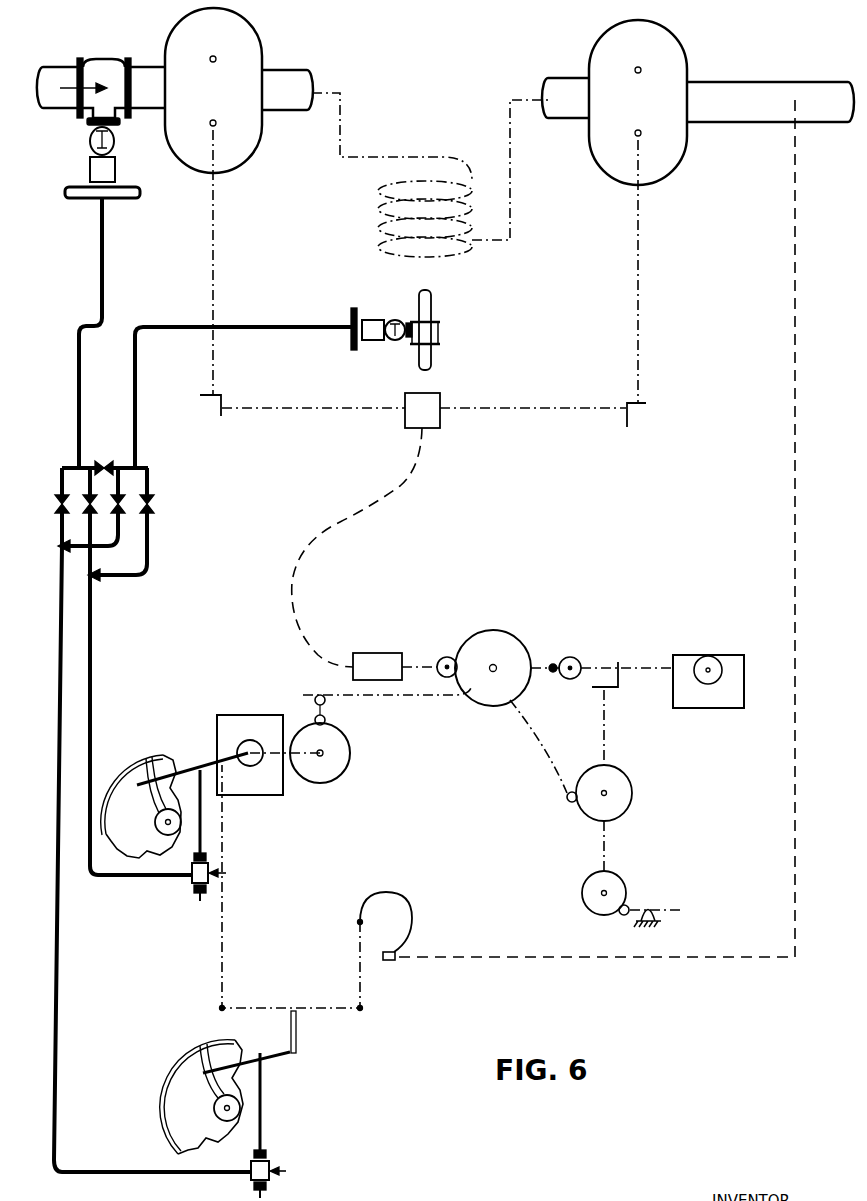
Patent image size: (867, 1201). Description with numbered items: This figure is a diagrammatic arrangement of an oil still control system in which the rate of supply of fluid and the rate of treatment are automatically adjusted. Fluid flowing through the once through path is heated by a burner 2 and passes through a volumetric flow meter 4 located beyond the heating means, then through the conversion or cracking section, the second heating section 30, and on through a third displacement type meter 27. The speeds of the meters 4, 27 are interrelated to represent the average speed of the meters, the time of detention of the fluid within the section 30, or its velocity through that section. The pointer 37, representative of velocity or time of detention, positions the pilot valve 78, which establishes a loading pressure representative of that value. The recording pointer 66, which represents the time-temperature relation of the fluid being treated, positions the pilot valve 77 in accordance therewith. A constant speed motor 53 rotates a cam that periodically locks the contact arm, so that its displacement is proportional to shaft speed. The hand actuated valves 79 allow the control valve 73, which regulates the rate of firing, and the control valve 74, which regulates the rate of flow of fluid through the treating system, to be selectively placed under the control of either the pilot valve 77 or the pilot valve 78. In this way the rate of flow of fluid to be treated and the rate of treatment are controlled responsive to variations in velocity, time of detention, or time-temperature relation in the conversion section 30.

The burner 2 is at (433, 316).
The volumetric flow meter 4 is at (261, 148).
The third displacement type meter 27 is at (683, 160).
The second heating section 30 is at (440, 219).
The arm 37 is at (193, 766).
The constant speed motor 53 is at (713, 655).
The recording pointer 66 is at (250, 1060).
The control valve 73 is at (362, 352).
The control valve 74 is at (114, 148).
The pilot valve 77 is at (272, 1160).
The pilot valve 78 is at (191, 887).
The hand actuated valves 79 is at (118, 521).